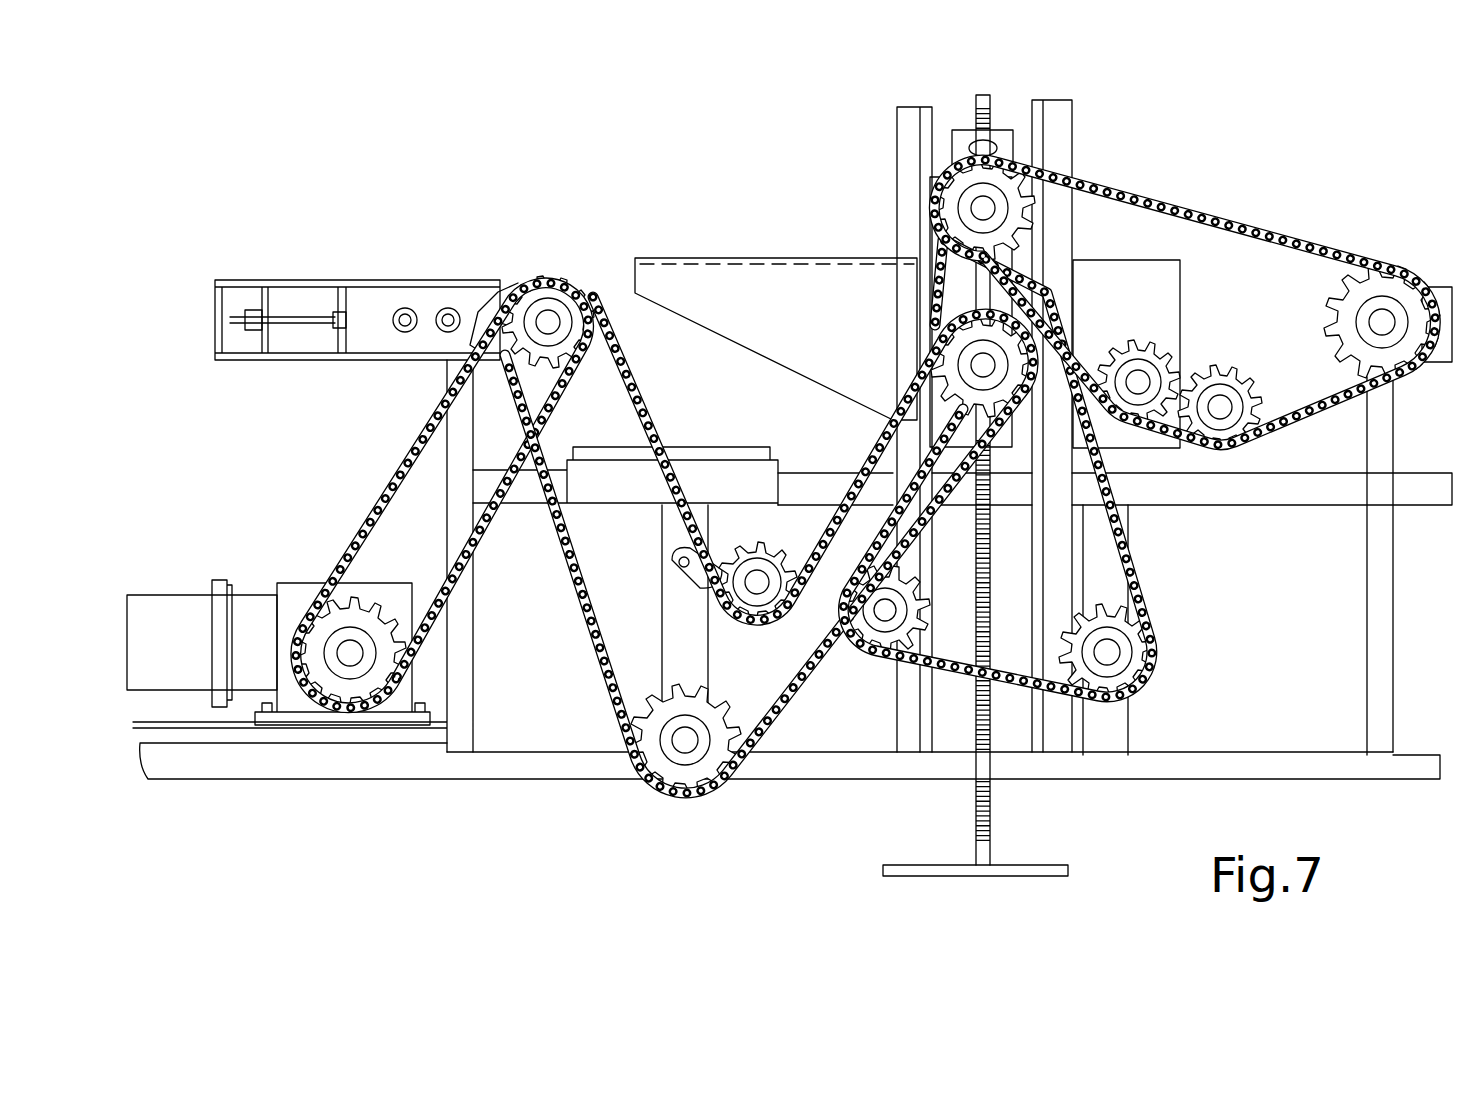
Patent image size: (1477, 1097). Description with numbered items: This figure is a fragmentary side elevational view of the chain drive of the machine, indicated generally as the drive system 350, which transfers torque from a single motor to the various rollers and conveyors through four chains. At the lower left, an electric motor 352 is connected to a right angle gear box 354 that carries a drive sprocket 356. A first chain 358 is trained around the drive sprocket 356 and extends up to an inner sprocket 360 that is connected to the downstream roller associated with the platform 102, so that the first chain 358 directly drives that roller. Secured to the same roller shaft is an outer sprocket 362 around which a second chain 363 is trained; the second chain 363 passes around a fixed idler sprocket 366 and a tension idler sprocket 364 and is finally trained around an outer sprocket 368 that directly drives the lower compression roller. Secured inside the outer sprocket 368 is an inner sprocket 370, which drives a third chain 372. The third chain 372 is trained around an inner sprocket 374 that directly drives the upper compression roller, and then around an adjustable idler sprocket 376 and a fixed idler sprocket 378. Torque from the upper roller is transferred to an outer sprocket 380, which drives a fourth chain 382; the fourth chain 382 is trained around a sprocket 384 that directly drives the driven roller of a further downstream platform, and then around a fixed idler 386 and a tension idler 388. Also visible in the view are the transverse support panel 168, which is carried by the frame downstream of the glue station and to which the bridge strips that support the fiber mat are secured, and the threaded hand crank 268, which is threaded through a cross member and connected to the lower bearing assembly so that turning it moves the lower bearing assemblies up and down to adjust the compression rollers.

The platform 102 is at (247, 280).
The transverse support panel 168 is at (752, 262).
The threaded hand crank 268 is at (975, 852).
The drive system 350 is at (1253, 122).
The electric motor 352 is at (165, 605).
The right angle gear box 354 is at (290, 590).
The drive sprocket 356 is at (352, 618).
The first chain 358 is at (368, 520).
The inner sprocket 360 is at (522, 285).
The outer sprocket 362 is at (548, 292).
The second chain 363 is at (642, 396).
The tension idler sprocket 364 is at (757, 543).
The fixed idler sprocket 366 is at (665, 748).
The outer sprocket 368 is at (940, 320).
The inner sprocket 370 is at (1005, 300).
The third chain 372 is at (937, 667).
The inner sprocket 374 is at (1020, 165).
The adjustable idler sprocket 376 is at (1133, 655).
The fixed idler sprocket 378 is at (885, 637).
The outer sprocket 380 is at (1013, 204).
The fourth chain 382 is at (1232, 222).
The sprocket 384 is at (1352, 295).
The fixed idler 386 is at (1140, 345).
The tension idler 388 is at (1212, 380).